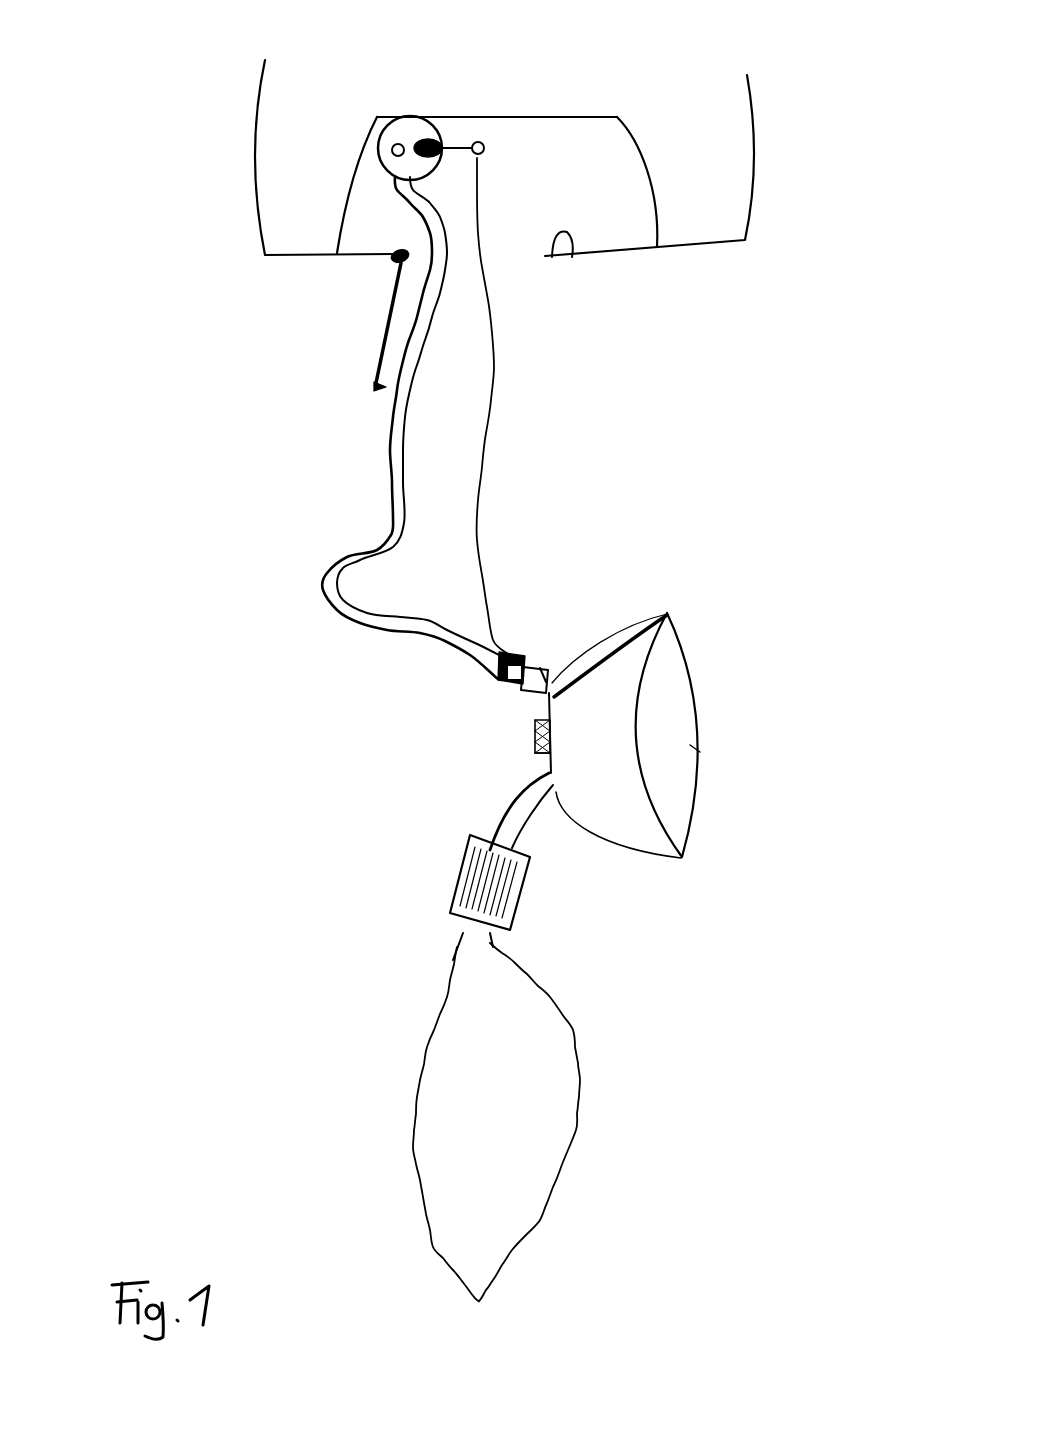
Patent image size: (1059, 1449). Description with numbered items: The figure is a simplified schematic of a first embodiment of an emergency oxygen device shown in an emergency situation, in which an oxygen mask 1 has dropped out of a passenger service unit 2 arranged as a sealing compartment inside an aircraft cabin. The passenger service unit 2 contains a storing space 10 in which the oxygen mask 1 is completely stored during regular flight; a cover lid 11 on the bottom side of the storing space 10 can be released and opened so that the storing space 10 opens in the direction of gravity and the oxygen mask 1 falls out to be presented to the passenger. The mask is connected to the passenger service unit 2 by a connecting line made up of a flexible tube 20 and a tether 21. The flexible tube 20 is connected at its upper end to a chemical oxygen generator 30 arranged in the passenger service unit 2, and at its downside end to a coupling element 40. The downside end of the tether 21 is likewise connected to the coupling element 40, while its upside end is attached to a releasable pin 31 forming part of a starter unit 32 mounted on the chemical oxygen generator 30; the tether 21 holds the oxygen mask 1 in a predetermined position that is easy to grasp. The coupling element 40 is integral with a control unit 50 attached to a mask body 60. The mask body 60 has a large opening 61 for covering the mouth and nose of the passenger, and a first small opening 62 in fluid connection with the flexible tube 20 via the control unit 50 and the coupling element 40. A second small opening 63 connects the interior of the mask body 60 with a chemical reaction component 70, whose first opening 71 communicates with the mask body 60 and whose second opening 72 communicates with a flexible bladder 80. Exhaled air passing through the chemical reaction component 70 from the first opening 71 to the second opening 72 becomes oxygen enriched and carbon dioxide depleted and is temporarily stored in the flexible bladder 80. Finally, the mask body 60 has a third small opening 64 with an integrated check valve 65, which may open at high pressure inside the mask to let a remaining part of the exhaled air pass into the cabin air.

The oxygen mask 1 is at (292, 920).
The passenger service unit 2 is at (653, 70).
The storing space 10 is at (555, 206).
The cover lid 11 is at (276, 353).
The flexible tube 20 is at (397, 477).
The tether 21 is at (490, 432).
The chemical oxygen generator 30 is at (403, 137).
The releasable pin 31 is at (463, 147).
The starter unit 32 is at (430, 143).
The coupling element 40 is at (518, 655).
The control unit 50 is at (545, 665).
The mask body 60 is at (612, 750).
The large opening 61 is at (670, 750).
The first small opening 62 is at (667, 615).
The second small opening 63 is at (551, 783).
The third small opening 64 is at (538, 723).
The check valve 65 is at (538, 747).
The chemical reaction component 70 is at (507, 890).
The first opening 71 is at (497, 830).
The second opening 72 is at (453, 946).
The flexible bladder 80 is at (505, 1131).